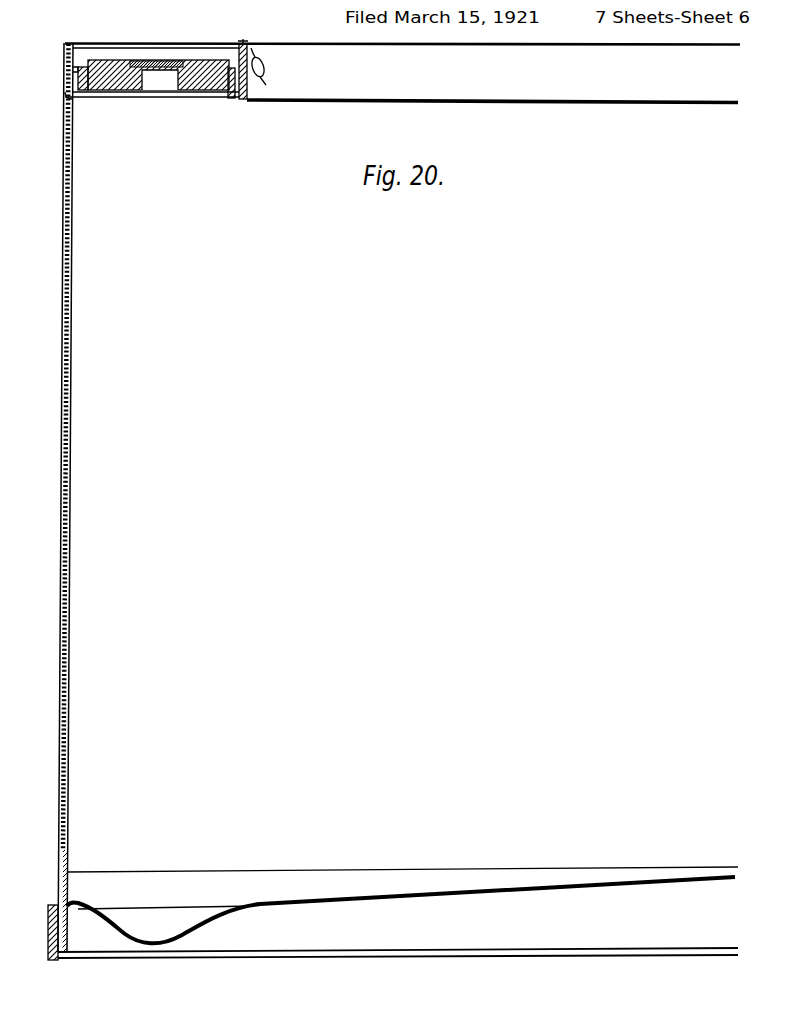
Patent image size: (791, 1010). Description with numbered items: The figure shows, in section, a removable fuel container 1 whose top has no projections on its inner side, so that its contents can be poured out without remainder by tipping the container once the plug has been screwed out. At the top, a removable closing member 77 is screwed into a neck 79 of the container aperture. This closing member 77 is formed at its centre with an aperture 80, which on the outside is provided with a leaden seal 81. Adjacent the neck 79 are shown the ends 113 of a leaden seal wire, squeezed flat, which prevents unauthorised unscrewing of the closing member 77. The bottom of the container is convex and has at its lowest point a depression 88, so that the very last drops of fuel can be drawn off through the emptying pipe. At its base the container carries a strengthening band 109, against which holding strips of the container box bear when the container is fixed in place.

The casing wall 1 is at (70, 216).
The closing member 77 is at (205, 70).
The neck 79 is at (247, 92).
The aperture 80 is at (165, 84).
The leaden seal 81 is at (158, 60).
The depression 88 is at (155, 926).
The strengthening band 109 is at (48, 928).
The ends of the seal wire 113 is at (264, 67).